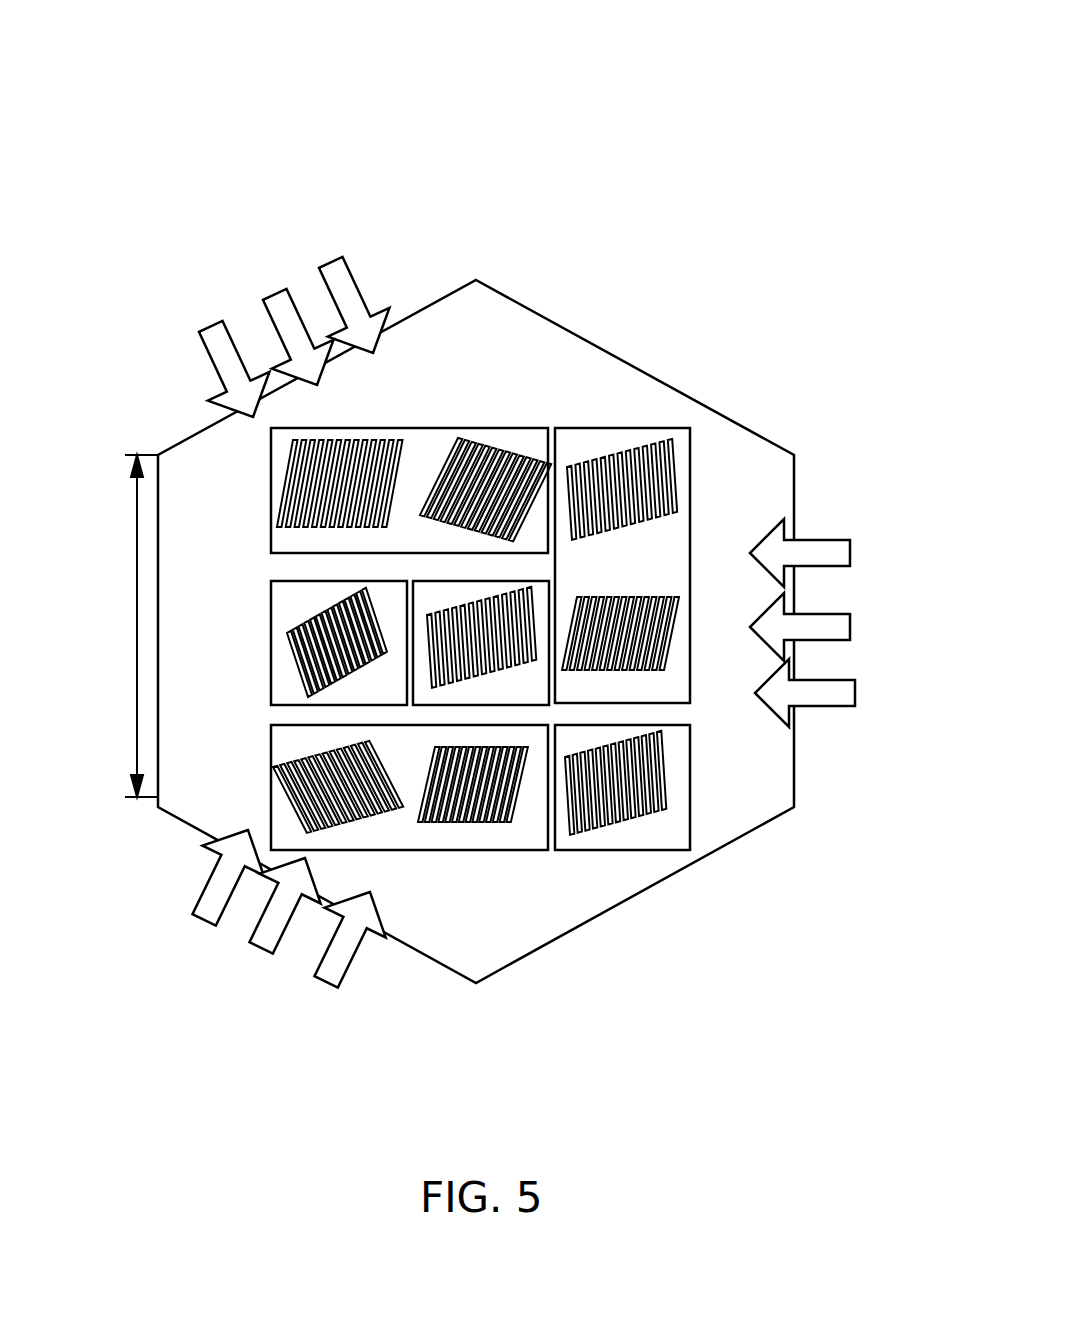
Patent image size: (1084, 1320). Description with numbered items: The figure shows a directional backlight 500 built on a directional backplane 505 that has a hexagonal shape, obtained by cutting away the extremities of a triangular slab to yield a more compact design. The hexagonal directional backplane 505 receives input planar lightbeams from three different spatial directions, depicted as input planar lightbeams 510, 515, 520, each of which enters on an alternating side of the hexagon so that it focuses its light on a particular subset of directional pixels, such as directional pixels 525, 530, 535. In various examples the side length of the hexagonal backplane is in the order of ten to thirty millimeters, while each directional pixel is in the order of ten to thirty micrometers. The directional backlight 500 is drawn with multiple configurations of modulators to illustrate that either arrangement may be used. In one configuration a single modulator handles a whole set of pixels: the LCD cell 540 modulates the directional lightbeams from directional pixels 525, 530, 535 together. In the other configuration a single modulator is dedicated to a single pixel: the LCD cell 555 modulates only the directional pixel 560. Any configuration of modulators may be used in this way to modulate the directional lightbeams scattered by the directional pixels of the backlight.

The directional backlight 500 is at (503, 90).
The directional backplane 505 is at (542, 372).
The input planar lightbeam 510 is at (347, 293).
The input planar lightbeam 515 is at (815, 550).
The input planar lightbeam 520 is at (210, 898).
The directional pixel 525 is at (325, 456).
The directional pixel 530 is at (513, 460).
The directional pixel 535 is at (628, 467).
The LCD cell 540 is at (413, 448).
The LCD cell 555 is at (290, 608).
The directional pixel 560 is at (305, 680).